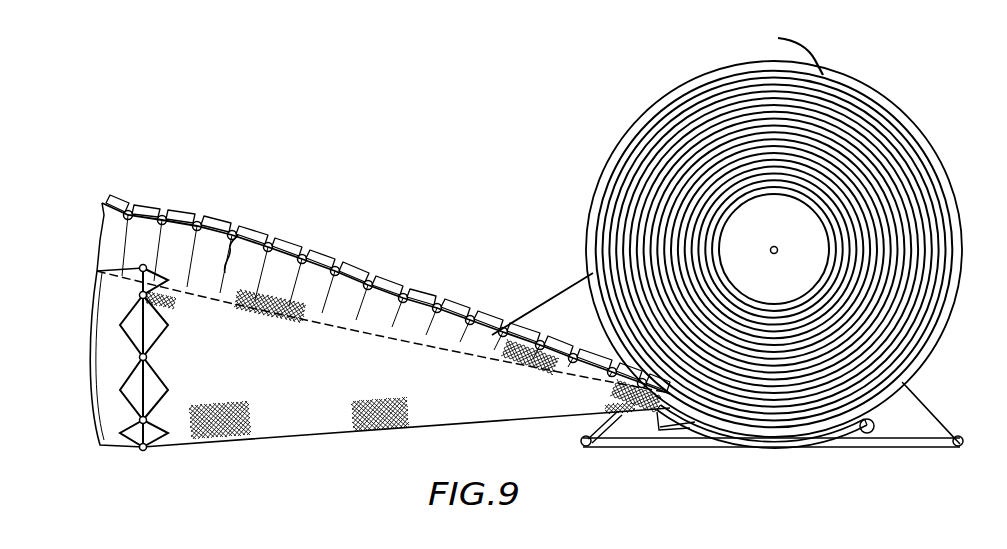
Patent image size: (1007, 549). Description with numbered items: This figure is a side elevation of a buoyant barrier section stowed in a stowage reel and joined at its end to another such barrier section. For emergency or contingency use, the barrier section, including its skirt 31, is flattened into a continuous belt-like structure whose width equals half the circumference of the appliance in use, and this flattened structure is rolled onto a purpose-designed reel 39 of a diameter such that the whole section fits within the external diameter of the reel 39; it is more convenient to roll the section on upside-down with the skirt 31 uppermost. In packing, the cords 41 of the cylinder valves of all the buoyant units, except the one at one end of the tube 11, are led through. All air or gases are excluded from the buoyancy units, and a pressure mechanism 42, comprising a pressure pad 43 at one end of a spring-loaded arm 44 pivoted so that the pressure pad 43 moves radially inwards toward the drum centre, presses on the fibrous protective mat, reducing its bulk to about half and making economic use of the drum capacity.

The tube 11 is at (323, 417).
The skirt 31 is at (380, 298).
The reel 39 is at (802, 230).
The cords 41 is at (560, 295).
The pressure mechanism 42 is at (795, 440).
The pressure pad 43 is at (685, 420).
The spring loaded arm 44 is at (827, 438).